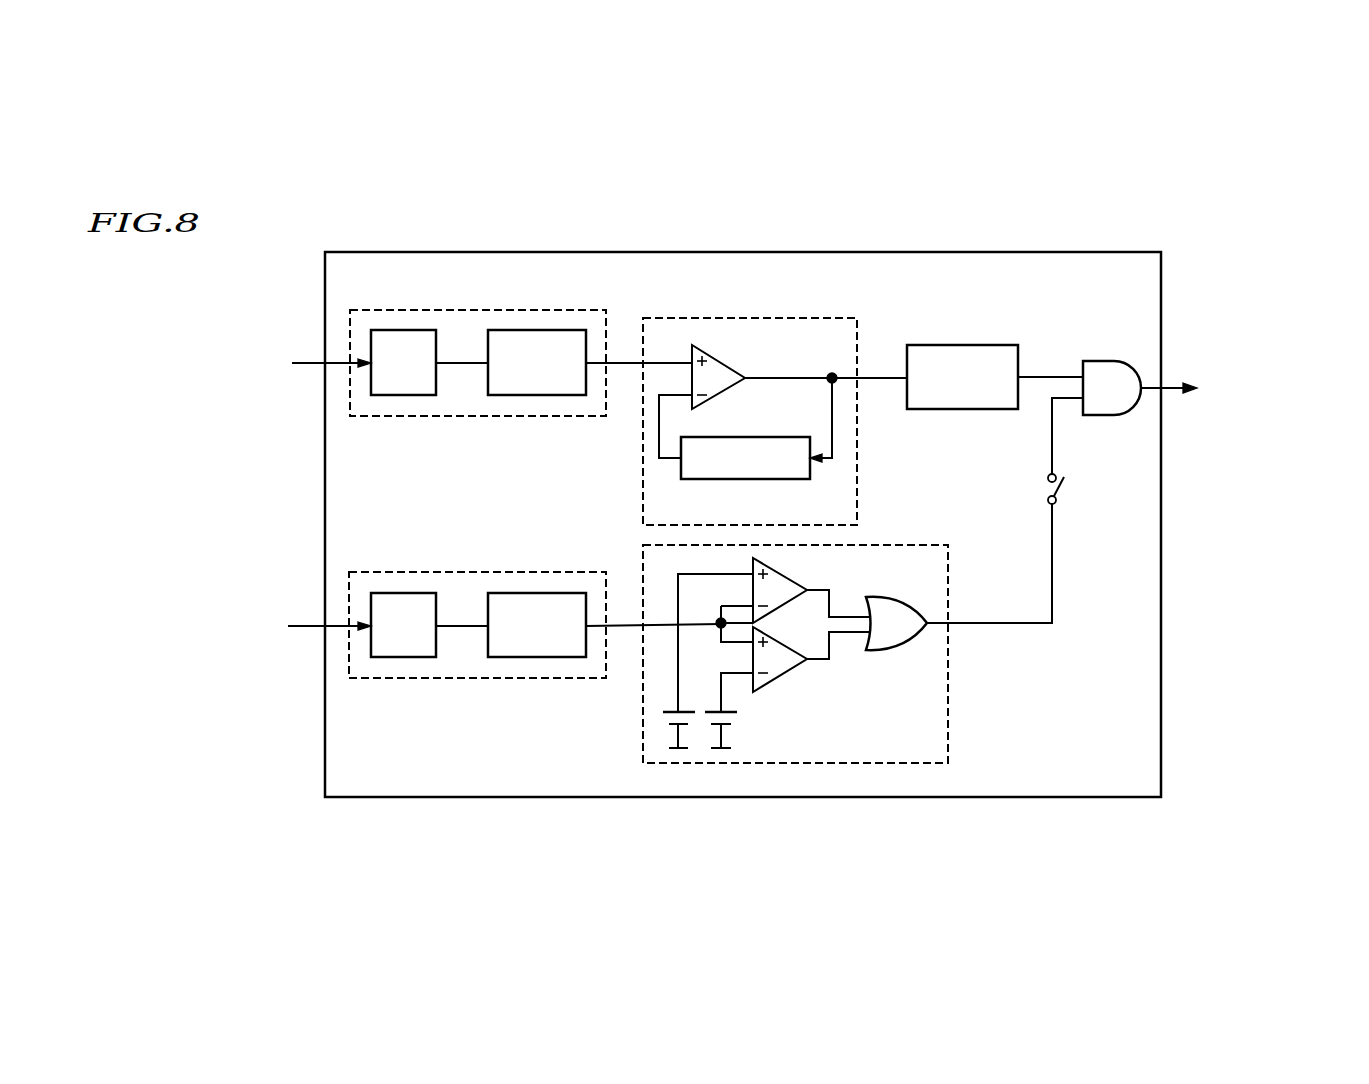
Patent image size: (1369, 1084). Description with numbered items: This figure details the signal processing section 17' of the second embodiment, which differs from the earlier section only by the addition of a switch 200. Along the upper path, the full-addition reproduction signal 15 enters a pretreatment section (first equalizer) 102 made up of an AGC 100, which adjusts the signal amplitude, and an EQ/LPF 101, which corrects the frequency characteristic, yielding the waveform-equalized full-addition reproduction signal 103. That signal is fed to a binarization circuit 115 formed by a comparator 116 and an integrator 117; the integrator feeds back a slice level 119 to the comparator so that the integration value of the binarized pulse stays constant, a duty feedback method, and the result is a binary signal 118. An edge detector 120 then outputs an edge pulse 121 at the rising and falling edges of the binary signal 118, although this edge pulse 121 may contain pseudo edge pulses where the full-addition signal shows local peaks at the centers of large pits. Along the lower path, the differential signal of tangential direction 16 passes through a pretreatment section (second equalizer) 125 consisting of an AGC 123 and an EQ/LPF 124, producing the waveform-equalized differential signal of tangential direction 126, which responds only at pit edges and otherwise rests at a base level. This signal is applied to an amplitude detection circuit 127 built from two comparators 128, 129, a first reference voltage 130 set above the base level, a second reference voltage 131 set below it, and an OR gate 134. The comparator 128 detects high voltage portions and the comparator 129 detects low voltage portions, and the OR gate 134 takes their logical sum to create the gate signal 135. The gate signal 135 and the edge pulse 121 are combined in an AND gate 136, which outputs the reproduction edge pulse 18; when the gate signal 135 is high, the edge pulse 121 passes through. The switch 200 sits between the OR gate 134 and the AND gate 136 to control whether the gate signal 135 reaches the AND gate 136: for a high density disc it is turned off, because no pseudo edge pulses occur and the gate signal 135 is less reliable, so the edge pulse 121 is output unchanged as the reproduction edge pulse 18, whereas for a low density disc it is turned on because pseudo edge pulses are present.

The full-addition reproduction signal 15 is at (206, 352).
The differential signal of tangential direction 16 is at (220, 624).
The reproduction edge pulse 18 is at (1246, 383).
The signal processing section 17' is at (789, 524).
The AGC 100 is at (403, 395).
The EQ/LPF 101 is at (538, 395).
The pretreatment section (first equalizer) 102 is at (547, 307).
The waveform-equalized full-addition reproduction signal 103 is at (639, 349).
The binarization circuit 115 is at (738, 318).
The comparator 116 is at (745, 350).
The integrator 117 is at (745, 479).
The binary signal 118 is at (826, 365).
The slice level 119 is at (659, 425).
The edge detector 120 is at (957, 345).
The edge pulse 121 is at (1050, 364).
The AGC 123 is at (403, 657).
The EQ/LPF 124 is at (538, 657).
The pretreatment section (second equalizer) 125 is at (547, 572).
The waveform-equalized differential signal of tangential direction 126 is at (653, 610).
The amplitude detection circuit 127 is at (903, 545).
The comparator 128 is at (782, 567).
The comparator 129 is at (782, 680).
The first reference voltage 130 is at (703, 647).
The second reference voltage 131 is at (724, 696).
The OR gate 134 is at (896, 623).
The gate signal 135 is at (1009, 563).
The AND gate 136 is at (1112, 388).
The switch 200 is at (1066, 485).